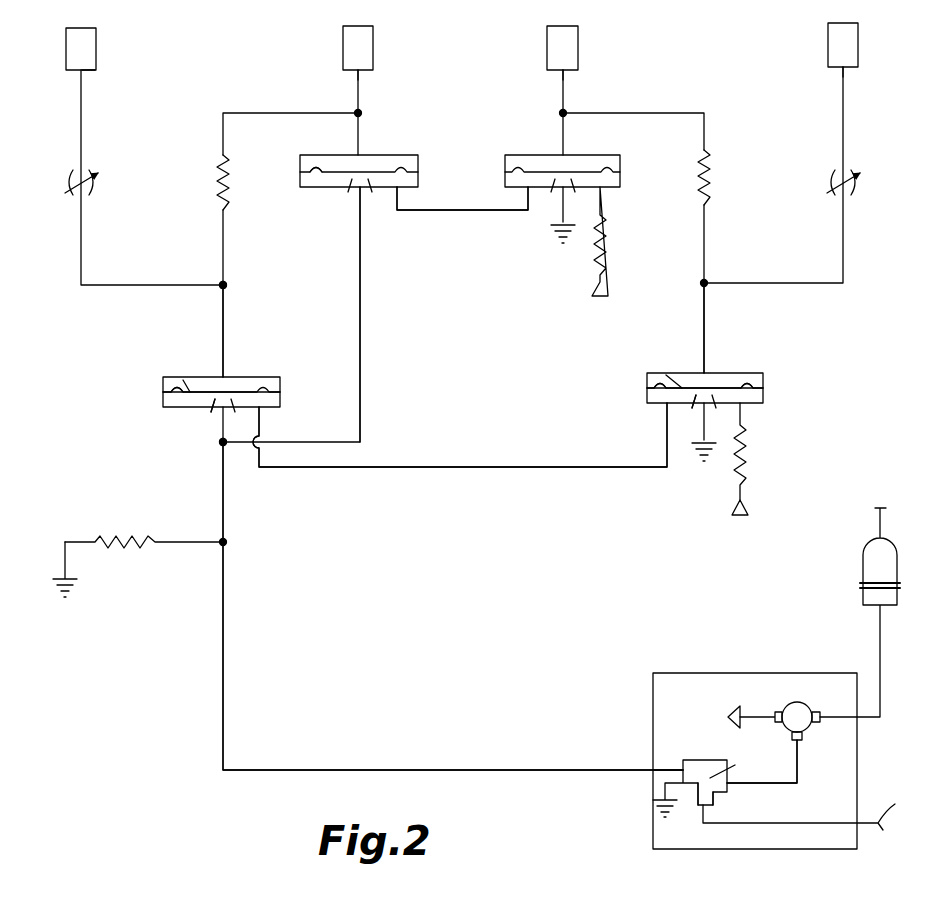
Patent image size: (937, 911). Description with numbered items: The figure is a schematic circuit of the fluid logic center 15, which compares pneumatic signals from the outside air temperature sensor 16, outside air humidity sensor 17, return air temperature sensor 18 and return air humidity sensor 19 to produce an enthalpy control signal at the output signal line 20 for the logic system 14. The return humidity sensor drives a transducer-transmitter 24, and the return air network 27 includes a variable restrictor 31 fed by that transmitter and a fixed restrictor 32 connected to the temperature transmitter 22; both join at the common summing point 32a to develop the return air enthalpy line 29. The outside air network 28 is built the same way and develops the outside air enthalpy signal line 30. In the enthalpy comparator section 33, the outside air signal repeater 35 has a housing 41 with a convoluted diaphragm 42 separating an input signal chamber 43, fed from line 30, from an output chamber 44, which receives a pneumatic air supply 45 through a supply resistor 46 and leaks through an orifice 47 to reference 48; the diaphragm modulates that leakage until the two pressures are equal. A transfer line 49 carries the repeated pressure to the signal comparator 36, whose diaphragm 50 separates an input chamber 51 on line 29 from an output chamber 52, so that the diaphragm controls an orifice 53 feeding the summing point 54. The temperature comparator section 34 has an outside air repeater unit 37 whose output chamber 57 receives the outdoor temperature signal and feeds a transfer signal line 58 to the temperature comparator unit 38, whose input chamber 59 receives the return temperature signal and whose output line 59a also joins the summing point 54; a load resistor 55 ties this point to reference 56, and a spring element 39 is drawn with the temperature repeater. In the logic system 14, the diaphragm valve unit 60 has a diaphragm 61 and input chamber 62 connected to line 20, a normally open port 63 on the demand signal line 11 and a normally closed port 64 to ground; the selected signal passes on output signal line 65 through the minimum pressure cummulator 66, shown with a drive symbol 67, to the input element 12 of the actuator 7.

The actuator 7 is at (860, 549).
The demand signal line 11 is at (888, 820).
The input element 12 is at (860, 593).
The logic system 14 is at (695, 715).
The logic center 15 is at (523, 324).
The outside air temperature sensor 16 is at (580, 48).
The outside air humidity sensor 17 is at (826, 40).
The return air temperature sensor 18 is at (340, 43).
The return air humidity sensor 19 is at (98, 42).
The output signal line 20 is at (225, 672).
The temperature transmitter 22 is at (373, 58).
The fluid pressure signal transducer-transmitter 24 is at (90, 62).
The enthalpy signal generating network 27 is at (165, 218).
The enthalpy signal generating network 28 is at (785, 235).
The return air enthalpy line 29 is at (225, 325).
The outside air enthalpy signal line 30 is at (703, 322).
The variable restrictor 31 is at (73, 199).
The fixed linear restrictor 32 is at (226, 176).
The common summing point 32a is at (226, 283).
The enthalpy comparator section 33 is at (521, 434).
The temperature comparator section 34 is at (466, 185).
The outside air signal repeater 35 is at (768, 390).
The signal comparator 36 is at (284, 390).
The outside air repeater unit 37 is at (623, 167).
The temperature comparator unit 38 is at (392, 157).
The spring return 39 is at (600, 241).
The housing 41 is at (746, 375).
The convoluted diaphragm 42 is at (684, 382).
The input signal chamber 43 is at (705, 383).
The output chamber 44 is at (660, 396).
The pneumatic air supply 45 is at (750, 513).
The supply resistor 46 is at (745, 447).
The orifice 47 is at (700, 410).
The reference 48 is at (706, 458).
The signal pressure transfer line 49 is at (490, 467).
The diaphragm 50 is at (190, 385).
The input chamber 51 is at (190, 378).
The output chamber 52 is at (178, 395).
The orifice 53 is at (216, 414).
The summing point 54 is at (220, 447).
The load resistor 55 is at (116, 540).
The reference 56 is at (72, 592).
The output chamber 57 is at (545, 192).
The transfer signal line 58 is at (450, 210).
The input chamber 59 is at (340, 160).
The output line 59a is at (362, 340).
The diaphragm valve unit 60 is at (712, 758).
The diaphragm 61 is at (735, 766).
The input chamber 62 is at (683, 772).
The normally open input valve port 63 is at (718, 798).
The normally closed input port 64 is at (688, 790).
The output signal line 65 is at (800, 760).
The minimum pressure cummulator 66 is at (799, 702).
The pump drive 67 is at (737, 705).